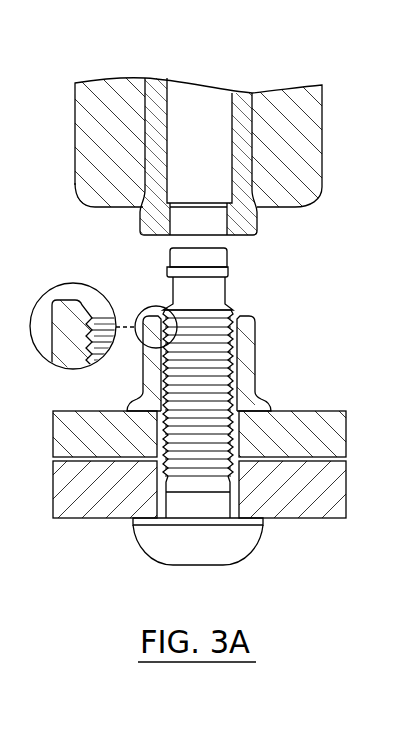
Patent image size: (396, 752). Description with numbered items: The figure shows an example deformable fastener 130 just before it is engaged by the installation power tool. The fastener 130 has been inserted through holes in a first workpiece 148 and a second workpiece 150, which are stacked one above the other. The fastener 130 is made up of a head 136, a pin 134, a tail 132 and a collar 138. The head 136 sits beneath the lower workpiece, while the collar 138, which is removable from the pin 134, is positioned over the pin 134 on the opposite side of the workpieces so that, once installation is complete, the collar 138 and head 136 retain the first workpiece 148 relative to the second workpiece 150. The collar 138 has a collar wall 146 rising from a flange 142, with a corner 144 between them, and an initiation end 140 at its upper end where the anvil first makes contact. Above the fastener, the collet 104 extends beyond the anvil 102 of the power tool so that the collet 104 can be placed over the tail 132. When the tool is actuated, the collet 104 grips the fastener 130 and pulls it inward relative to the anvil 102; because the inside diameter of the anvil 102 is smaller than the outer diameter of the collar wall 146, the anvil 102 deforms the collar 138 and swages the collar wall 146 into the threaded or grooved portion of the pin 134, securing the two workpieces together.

The anvil 102 is at (322, 143).
The collet 104 is at (140, 222).
The deformable fastener 130 is at (225, 288).
The tail 132 is at (172, 257).
The pin 134 is at (172, 470).
The head 136 is at (240, 553).
The collar 138 is at (243, 372).
The initiation end 140 is at (250, 310).
The flange 142 is at (273, 405).
The corner 144 is at (141, 392).
The collar wall 146 is at (255, 333).
The first workpiece 148 is at (318, 430).
The second workpiece 150 is at (318, 480).